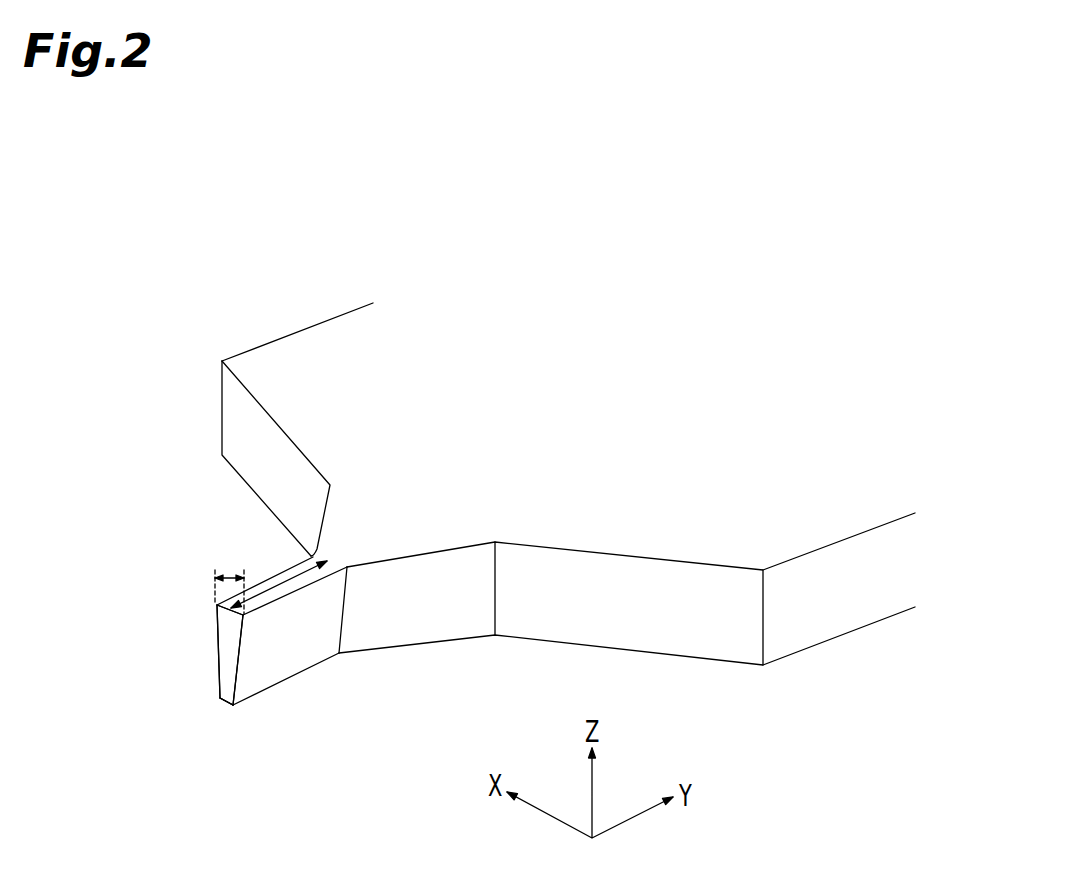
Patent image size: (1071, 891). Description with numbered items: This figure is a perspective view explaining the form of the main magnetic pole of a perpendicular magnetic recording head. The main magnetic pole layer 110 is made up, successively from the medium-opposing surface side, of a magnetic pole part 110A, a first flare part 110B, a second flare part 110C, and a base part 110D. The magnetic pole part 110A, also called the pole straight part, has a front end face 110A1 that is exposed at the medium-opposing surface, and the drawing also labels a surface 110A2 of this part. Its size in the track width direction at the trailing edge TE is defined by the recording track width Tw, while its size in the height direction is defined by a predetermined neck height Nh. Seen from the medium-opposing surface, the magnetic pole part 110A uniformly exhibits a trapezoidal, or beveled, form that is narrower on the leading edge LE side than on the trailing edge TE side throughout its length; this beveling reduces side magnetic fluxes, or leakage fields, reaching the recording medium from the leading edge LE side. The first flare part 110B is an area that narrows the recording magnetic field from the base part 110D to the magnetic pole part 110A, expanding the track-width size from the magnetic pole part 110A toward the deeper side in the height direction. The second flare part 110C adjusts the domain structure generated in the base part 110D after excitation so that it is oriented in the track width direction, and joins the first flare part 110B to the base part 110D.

The main magnetic pole layer 110 is at (215, 238).
The base part 110D is at (393, 341).
The second flare part 110C is at (278, 398).
The first flare part 110B is at (338, 523).
The magnetic pole part 110A is at (283, 571).
The side surface of blade tip 110A2 is at (227, 673).
The front end face 110A1 is at (217, 682).
The trailing edge TE is at (216, 604).
The leading edge LE is at (233, 707).
The recording track width Tw is at (239, 582).
The neck height Nh is at (283, 572).